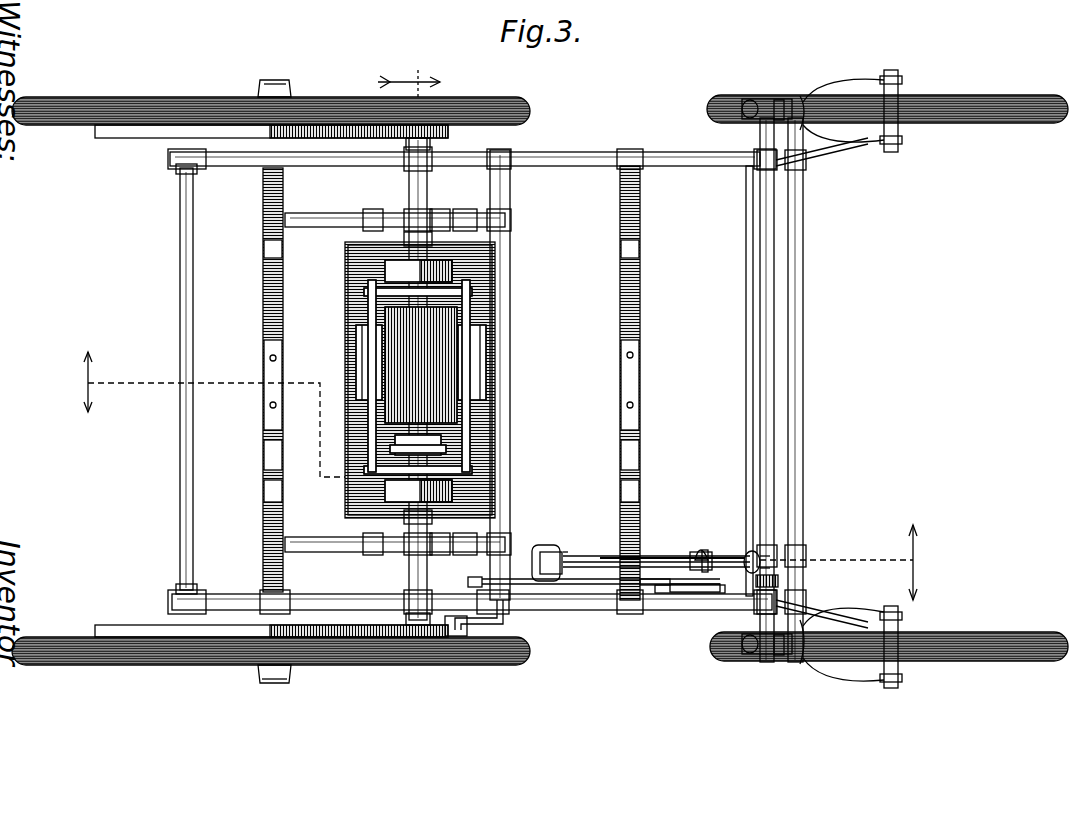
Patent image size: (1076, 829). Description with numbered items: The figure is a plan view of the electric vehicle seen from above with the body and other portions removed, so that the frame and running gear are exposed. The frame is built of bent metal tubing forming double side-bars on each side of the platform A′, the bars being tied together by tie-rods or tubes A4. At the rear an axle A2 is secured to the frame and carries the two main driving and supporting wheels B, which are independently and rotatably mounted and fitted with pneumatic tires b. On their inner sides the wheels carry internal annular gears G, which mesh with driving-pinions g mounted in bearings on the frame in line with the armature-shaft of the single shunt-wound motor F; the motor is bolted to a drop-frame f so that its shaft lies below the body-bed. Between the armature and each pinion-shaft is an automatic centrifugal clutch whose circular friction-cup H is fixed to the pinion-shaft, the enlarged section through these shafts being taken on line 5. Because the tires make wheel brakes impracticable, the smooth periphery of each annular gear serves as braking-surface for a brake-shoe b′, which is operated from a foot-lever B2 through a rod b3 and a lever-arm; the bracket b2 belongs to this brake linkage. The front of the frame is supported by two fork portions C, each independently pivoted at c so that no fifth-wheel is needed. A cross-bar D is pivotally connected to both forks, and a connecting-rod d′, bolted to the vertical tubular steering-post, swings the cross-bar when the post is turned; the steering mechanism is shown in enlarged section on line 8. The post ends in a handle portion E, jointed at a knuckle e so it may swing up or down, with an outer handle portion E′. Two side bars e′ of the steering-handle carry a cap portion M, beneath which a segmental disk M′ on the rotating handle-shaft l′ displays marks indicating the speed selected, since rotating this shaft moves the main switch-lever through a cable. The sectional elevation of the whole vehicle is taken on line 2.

The pneumatic tires b is at (66, 110).
The main driving and supporting wheels B is at (290, 92).
The internal annular gears G is at (118, 136).
The platform A′ is at (584, 153).
The tie-rods or tubes A4 is at (180, 338).
The drop-frame f is at (345, 525).
The axle A2 is at (505, 340).
The driving-pinions g is at (405, 268).
The motor F is at (432, 356).
The circular friction-cup H is at (455, 270).
The brake bracket b2 is at (468, 582).
The rod b3 is at (625, 590).
The brake-shoe b′ is at (470, 630).
The handle portion E′ is at (546, 547).
The side bars of the steering-handle e′ is at (590, 548).
The handle-shaft l′ is at (603, 556).
The segmental disk M′ is at (700, 548).
The cap portion M is at (706, 552).
The knuckle-joint e is at (751, 553).
The handle portion E is at (710, 592).
The foot-lever B2 is at (760, 580).
The cross-bar D is at (729, 381).
The pivots of the fork portions c is at (798, 100).
The fork portions C is at (835, 82).
The connecting-rod d′ is at (812, 150).
The section line 2 is at (203, 414).
The section line 5 is at (409, 72).
The section line 8 is at (846, 562).